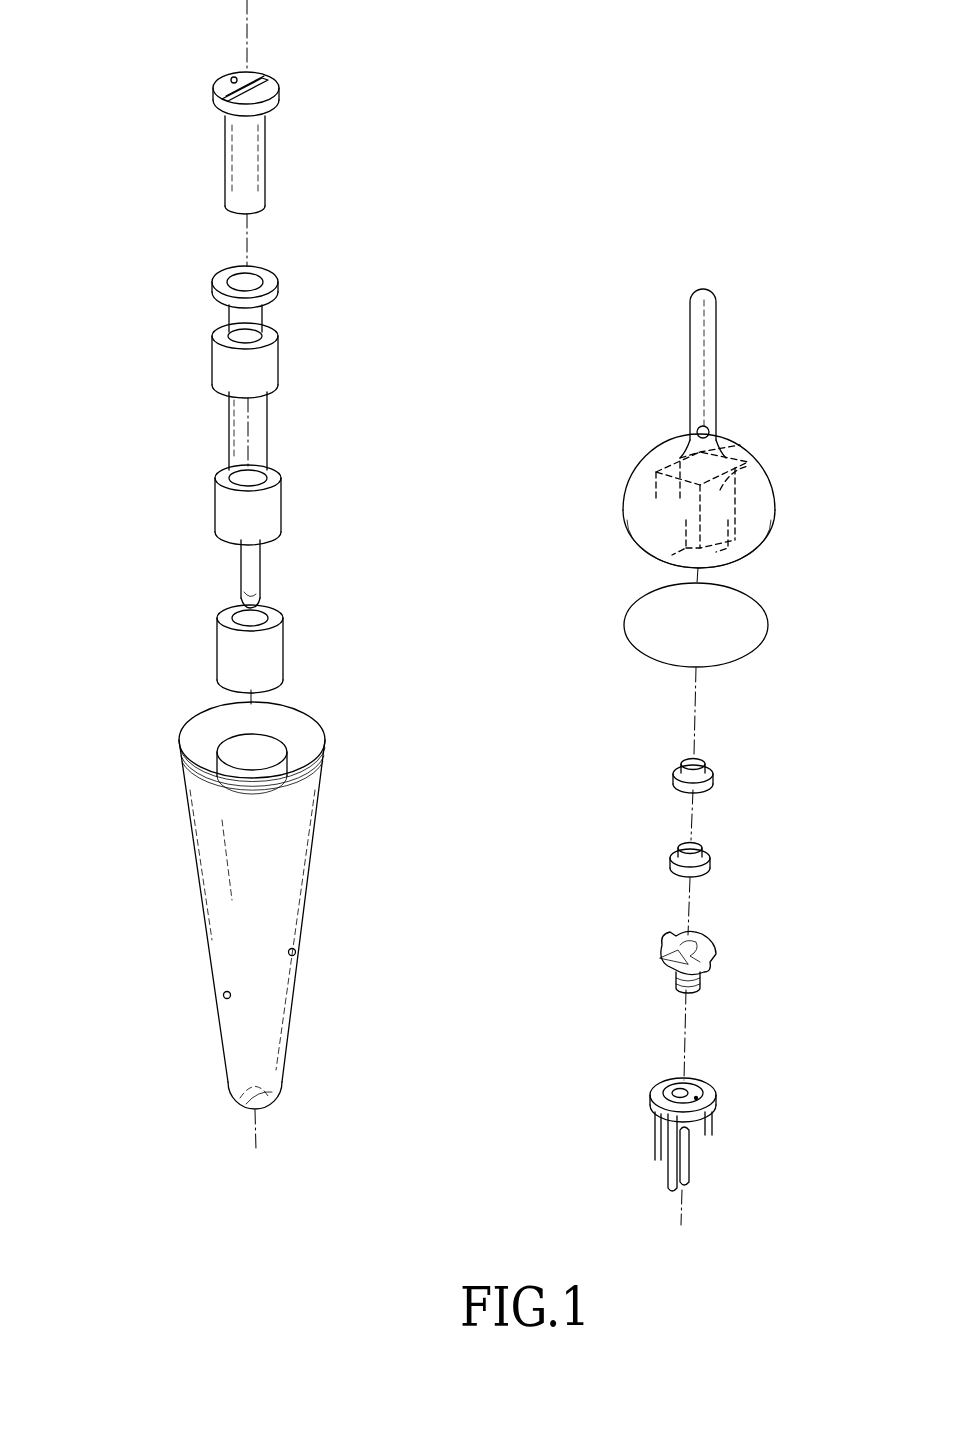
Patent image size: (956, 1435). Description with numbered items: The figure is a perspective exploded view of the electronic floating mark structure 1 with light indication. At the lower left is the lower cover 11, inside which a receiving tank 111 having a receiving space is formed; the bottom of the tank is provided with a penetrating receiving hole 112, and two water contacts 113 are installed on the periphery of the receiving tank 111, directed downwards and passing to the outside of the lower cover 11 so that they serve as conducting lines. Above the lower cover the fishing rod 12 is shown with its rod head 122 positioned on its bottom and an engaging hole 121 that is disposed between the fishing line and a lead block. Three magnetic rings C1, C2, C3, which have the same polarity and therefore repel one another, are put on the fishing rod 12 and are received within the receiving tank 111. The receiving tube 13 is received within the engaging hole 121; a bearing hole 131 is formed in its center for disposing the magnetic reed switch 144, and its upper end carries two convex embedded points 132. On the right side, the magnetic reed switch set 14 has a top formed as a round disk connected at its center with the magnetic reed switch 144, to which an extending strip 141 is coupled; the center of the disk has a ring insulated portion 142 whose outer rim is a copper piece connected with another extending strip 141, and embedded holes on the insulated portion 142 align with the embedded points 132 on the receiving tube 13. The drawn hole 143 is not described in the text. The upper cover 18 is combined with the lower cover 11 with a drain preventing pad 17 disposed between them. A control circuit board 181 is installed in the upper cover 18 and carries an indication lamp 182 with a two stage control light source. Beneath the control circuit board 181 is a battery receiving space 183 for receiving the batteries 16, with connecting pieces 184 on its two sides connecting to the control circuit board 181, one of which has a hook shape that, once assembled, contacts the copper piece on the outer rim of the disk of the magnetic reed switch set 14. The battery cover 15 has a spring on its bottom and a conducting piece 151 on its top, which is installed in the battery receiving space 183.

The floating mark structure 1 is at (108, 926).
The lower cover 11 is at (278, 929).
The receiving tank 111 is at (272, 762).
The penetrating receiving hole 112 is at (262, 1104).
The water contacts 113 is at (296, 952).
The fishing rod 12 is at (245, 437).
The engaging hole 121 is at (234, 282).
The rod head 122 is at (261, 600).
The receiving tube 13 is at (258, 123).
The bearing hole 131 is at (266, 78).
The convex embedded points 132 is at (231, 79).
The magnetic ring C1 is at (268, 370).
The magnetic ring C2 is at (270, 512).
The magnetic ring C3 is at (272, 654).
The magnetic reed switch set 14 is at (711, 1122).
The extending strip 141 is at (652, 1148).
The ring insulated portion 142 is at (698, 1090).
The central hole 143 is at (680, 1090).
The magnetic reed switch 144 is at (690, 1168).
The battery cover 15 is at (661, 962).
The conducting piece 151 is at (660, 958).
The batteries 16 is at (714, 782).
The drain preventing pad 17 is at (766, 640).
The upper cover 18 is at (705, 441).
The control circuit board 181 is at (742, 445).
The indication lamp 182 is at (708, 428).
The battery receiving space 183 is at (752, 504).
The connecting pieces 184 is at (700, 550).